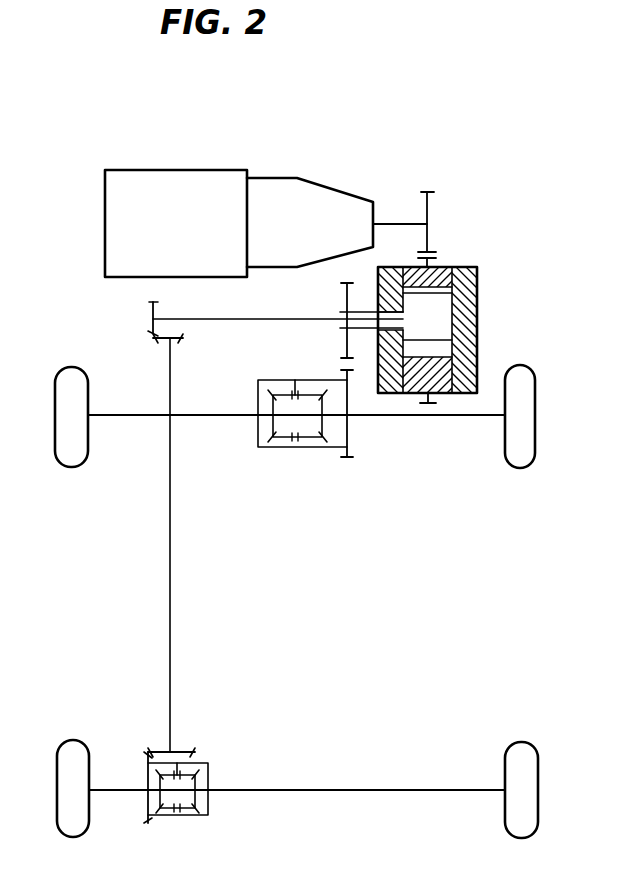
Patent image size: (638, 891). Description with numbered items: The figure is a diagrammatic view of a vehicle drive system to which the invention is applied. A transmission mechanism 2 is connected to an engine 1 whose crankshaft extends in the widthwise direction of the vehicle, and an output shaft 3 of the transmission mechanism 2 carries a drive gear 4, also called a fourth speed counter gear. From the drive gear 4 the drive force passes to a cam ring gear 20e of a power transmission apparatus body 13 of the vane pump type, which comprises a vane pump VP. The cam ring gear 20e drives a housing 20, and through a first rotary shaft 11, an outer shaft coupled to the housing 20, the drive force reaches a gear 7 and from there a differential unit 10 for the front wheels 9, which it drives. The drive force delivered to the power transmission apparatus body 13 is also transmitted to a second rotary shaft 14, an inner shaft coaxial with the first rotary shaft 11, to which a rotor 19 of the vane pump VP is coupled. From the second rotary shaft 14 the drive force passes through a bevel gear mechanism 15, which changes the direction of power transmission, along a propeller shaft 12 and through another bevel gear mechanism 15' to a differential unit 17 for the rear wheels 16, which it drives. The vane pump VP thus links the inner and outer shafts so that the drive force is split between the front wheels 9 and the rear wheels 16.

The engine 1 is at (190, 183).
The transmission mechanism 2 is at (328, 198).
The output shaft 3 is at (402, 222).
The drive gear 4 is at (430, 205).
The gear 7 is at (346, 343).
The front wheels 9 is at (68, 369).
The differential unit 10 is at (250, 386).
The first rotary shaft 11 is at (358, 308).
The propeller shaft 12 is at (171, 573).
The power transmission apparatus body 13 is at (465, 400).
The second rotary shaft 14 is at (303, 316).
The bevel gear mechanism 15 is at (141, 320).
The bevel gear mechanism 15' is at (194, 755).
The rear wheels 16 is at (75, 723).
The differential unit 17 is at (218, 770).
The rotor 19 is at (437, 313).
The housing 20 is at (415, 383).
The cam ring gear 20e is at (440, 258).
The vane pump VP is at (473, 265).